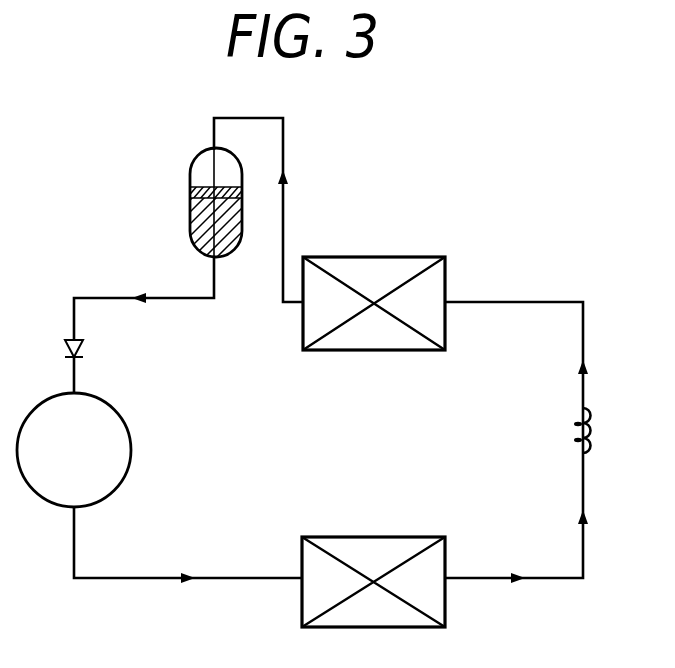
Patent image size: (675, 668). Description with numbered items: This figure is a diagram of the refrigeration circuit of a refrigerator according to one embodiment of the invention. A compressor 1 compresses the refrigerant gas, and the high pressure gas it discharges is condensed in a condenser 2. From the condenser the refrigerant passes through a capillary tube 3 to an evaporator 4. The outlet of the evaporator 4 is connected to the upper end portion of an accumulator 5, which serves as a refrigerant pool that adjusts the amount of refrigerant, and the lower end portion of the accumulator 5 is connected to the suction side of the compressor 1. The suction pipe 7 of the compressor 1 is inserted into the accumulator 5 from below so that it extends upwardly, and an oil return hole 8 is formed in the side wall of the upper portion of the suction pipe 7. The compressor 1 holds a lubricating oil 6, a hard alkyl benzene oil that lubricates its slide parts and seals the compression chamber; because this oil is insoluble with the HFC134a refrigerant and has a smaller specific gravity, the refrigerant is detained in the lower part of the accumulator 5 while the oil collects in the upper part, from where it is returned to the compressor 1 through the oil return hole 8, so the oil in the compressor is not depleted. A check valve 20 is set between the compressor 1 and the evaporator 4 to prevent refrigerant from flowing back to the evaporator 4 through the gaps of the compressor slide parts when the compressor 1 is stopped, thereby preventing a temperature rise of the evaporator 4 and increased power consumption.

The compressor 1 is at (132, 436).
The condenser 2 is at (421, 537).
The capillary tube 3 is at (590, 432).
The evaporator 4 is at (425, 257).
The accumulator 5 is at (190, 176).
The lubricating oil 6 is at (100, 459).
The suction pipe 7 is at (208, 222).
The oil return hole 8 is at (214, 188).
The check valve 20 is at (84, 349).